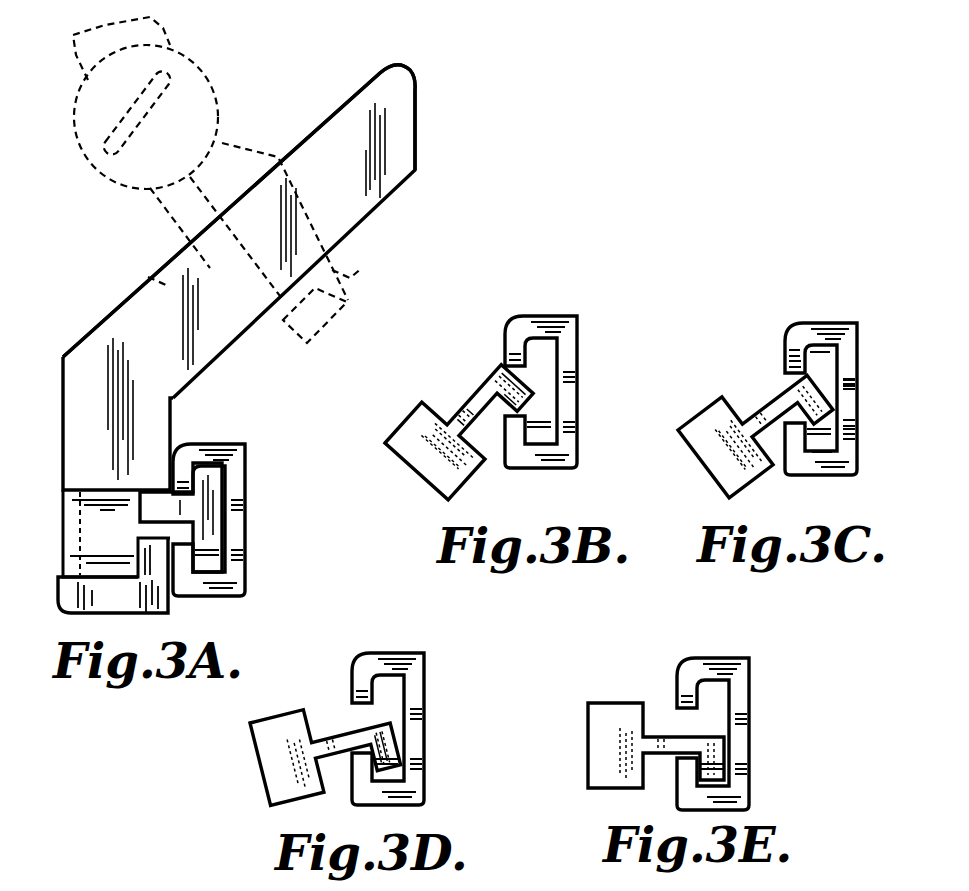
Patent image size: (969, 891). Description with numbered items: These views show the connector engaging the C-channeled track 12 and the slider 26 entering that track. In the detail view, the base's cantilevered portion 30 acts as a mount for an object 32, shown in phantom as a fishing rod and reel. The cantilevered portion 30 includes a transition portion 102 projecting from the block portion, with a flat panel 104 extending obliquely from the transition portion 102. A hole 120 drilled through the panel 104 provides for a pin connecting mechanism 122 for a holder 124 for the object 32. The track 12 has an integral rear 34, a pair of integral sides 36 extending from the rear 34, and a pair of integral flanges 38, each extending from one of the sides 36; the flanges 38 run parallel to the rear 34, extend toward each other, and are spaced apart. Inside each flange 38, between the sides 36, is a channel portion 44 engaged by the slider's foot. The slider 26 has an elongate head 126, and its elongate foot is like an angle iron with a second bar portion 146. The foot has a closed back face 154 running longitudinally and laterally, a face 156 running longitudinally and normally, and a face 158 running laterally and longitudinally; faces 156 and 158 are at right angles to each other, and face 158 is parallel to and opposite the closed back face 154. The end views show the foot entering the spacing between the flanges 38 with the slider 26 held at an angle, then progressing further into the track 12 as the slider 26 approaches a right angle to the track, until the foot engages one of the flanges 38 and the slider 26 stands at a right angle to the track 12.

In FIG. 3A, the C-channeled track 12 is at (249, 511).
In FIG. 3B, the C-channeled track 12 is at (541, 392).
In FIG. 3D, the C-channeled track 12 is at (422, 672).
In FIG. 3E, the C-channeled track 12 is at (751, 716).
In FIG. 3A, the slider 26 is at (181, 517).
In FIG. 3B, the slider 26 is at (418, 490).
In FIG. 3C, the slider 26 is at (697, 485).
In FIG. 3D, the slider 26 is at (250, 786).
In FIG. 3E, the slider 26 is at (578, 738).
In FIG. 3A, the cantilevered portion 30 is at (316, 118).
In FIG. 3A, the object 32 is at (221, 54).
In FIG. 3C, the rear 34 is at (857, 388).
In FIG. 3C, the sides 36 is at (826, 322).
In FIG. 3C, the flanges 38 is at (784, 350).
In FIG. 3C, the channel portions 44 is at (822, 357).
In FIG. 3A, the transition portion 102 is at (63, 378).
In FIG. 3A, the flat panel 104 is at (359, 92).
In FIG. 3A, the hole 120 is at (124, 265).
In FIG. 3A, the pin connecting mechanism 122 is at (362, 268).
In FIG. 3A, the holder 124 is at (157, 243).
In FIG. 3B, the elongate head 126 is at (397, 427).
In FIG. 3C, the elongate head 126 is at (695, 417).
In FIG. 3B, the second bar portion 146 is at (491, 406).
In FIG. 3B, the closed back face 154 is at (471, 390).
In FIG. 3D, the face 156 is at (392, 731).
In FIG. 3B, the face 158 is at (519, 409).